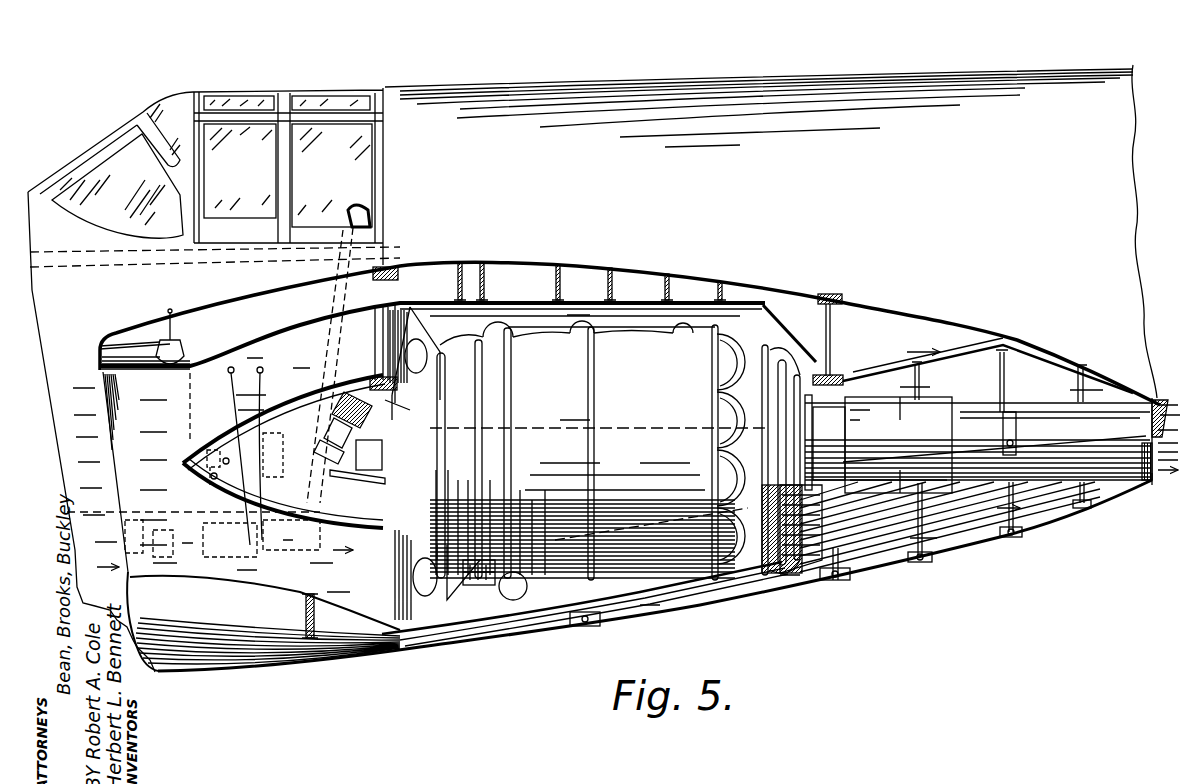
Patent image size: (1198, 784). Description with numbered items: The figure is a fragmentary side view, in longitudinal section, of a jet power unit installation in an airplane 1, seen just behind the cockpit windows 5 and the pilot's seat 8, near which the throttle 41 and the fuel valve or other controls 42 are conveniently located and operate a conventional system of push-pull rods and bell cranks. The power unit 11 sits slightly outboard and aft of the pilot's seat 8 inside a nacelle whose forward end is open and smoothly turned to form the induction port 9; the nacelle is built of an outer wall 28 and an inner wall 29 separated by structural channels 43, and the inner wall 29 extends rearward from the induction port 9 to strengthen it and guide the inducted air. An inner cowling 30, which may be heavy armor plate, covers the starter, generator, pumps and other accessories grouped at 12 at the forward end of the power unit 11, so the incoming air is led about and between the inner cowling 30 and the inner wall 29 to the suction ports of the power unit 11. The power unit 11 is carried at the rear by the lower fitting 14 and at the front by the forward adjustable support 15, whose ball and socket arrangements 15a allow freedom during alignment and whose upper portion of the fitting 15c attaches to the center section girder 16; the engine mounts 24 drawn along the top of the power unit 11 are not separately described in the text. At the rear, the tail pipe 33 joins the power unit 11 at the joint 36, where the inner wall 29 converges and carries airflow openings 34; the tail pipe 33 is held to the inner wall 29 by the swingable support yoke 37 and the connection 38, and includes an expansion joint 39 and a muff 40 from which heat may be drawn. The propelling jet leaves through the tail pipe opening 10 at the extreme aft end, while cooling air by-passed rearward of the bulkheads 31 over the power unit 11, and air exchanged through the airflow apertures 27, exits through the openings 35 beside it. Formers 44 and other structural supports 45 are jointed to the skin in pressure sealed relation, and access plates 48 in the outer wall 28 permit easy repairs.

The airplane fuselage 1 is at (592, 368).
The cockpit windows 5 is at (211, 167).
The pilot's seat 8 is at (630, 333).
The induction port 9 is at (117, 427).
The tail pipe opening 10 is at (1148, 485).
The power unit 11 is at (397, 347).
The accessories 12 is at (366, 470).
The lower fitting 14 is at (497, 573).
The forward adjustable support 15 is at (340, 418).
The ball and socket arrangements 15a is at (345, 470).
The upper portion of the fitting 15c is at (395, 410).
The girder 16 is at (833, 338).
The engine mount 24 is at (513, 334).
The airflow apertures 27 is at (512, 590).
The outer wall 28 is at (526, 634).
The inner wall 29 is at (241, 352).
The inner cowling 30 is at (183, 466).
The bulkheads 31 is at (780, 558).
The tail pipe 33 is at (978, 441).
The airflow openings 34 is at (802, 460).
The tail pipe openings 35 is at (1150, 403).
The joint 36 is at (828, 443).
The swingable support yoke 37 is at (1005, 383).
The connection 38 is at (1016, 445).
The expansion joint 39 is at (835, 458).
The muff 40 is at (926, 462).
The throttle 41 is at (160, 327).
The fuel valve or other controls 42 is at (235, 380).
The structural channels 43 is at (481, 280).
The formers 44 is at (598, 628).
The structural supports 45 is at (965, 552).
The access plates 48 is at (808, 600).